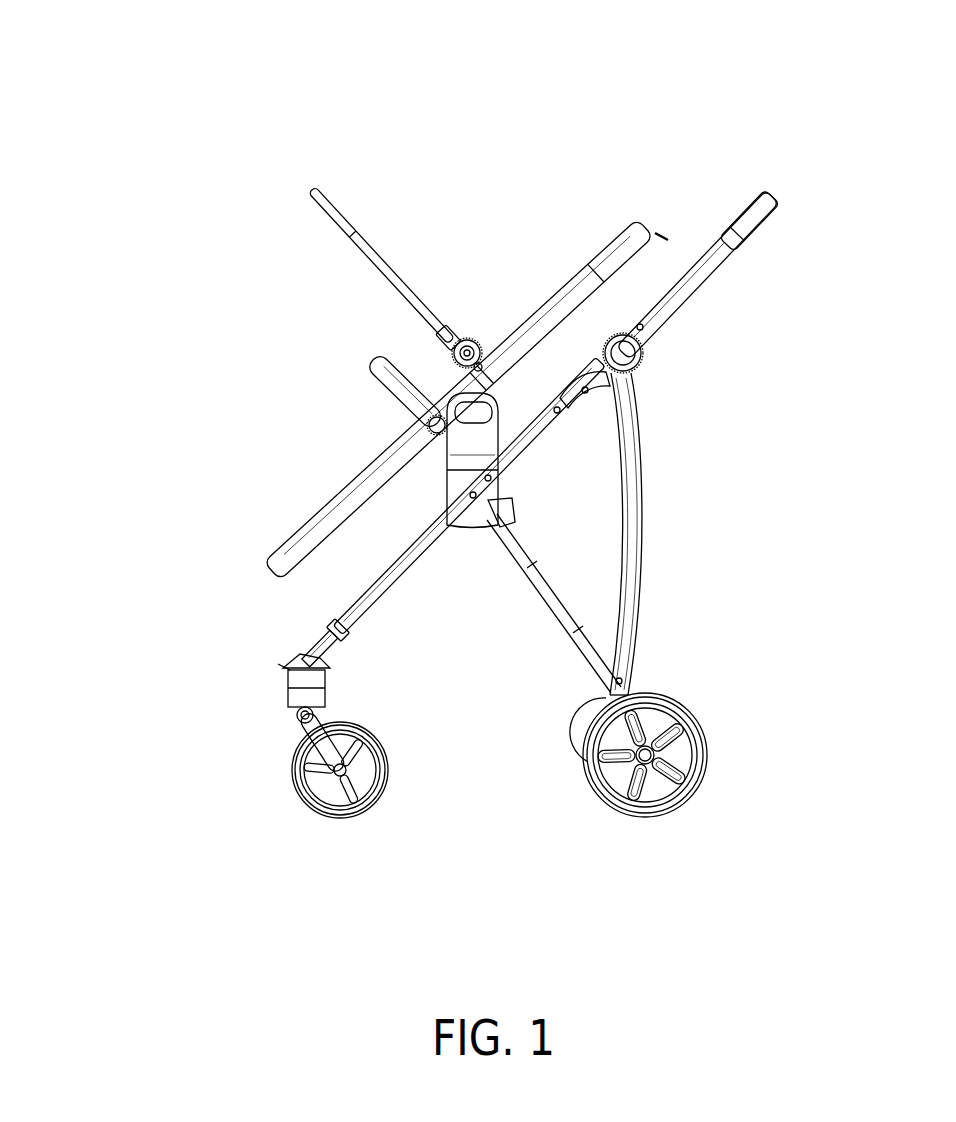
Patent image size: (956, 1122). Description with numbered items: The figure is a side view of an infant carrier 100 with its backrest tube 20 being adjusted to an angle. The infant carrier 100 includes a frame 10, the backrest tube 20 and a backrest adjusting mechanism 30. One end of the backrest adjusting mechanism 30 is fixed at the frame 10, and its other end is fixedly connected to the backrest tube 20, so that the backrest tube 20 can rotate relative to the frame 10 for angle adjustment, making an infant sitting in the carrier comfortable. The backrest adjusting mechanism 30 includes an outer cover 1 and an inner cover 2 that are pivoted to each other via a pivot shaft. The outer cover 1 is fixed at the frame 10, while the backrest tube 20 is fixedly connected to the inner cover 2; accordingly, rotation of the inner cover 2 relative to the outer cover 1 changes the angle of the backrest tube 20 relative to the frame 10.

The infant carrier 100 is at (142, 47).
The backrest tube 20 is at (614, 230).
The frame 10 is at (661, 569).
The backrest adjusting mechanism 30 is at (165, 352).
The inner cover 2 is at (396, 420).
The outer cover 1 is at (433, 460).